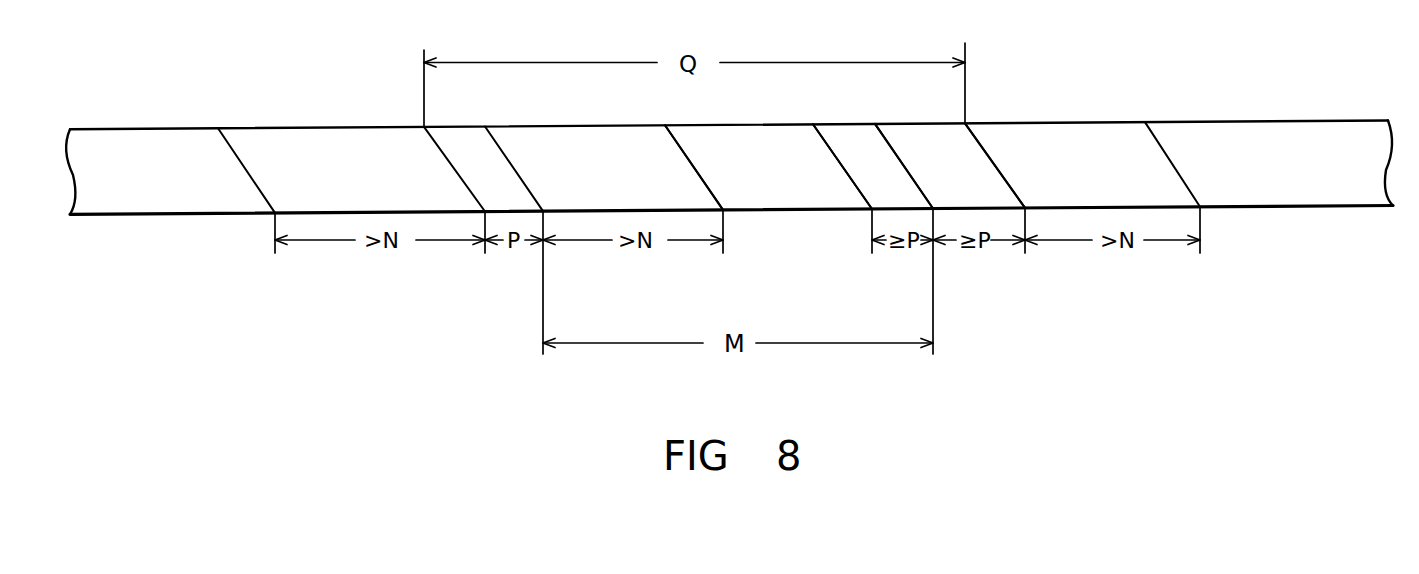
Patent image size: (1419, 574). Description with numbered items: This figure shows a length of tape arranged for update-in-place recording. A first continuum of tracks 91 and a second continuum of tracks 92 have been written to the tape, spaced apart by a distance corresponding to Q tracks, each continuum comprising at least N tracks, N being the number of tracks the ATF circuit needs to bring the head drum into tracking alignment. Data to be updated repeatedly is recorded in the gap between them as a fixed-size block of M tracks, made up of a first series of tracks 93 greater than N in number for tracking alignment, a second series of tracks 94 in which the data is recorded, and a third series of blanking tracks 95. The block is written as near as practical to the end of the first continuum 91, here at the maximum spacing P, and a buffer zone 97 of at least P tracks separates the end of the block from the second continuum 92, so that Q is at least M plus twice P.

The first continuum of tracks 91 is at (323, 143).
The second continuum of tracks 92 is at (1068, 135).
The first series of tracks 93 is at (609, 143).
The second series of tracks 94 is at (760, 143).
The third series of blanking tracks 95 is at (867, 140).
The buffer zone 97 is at (935, 130).